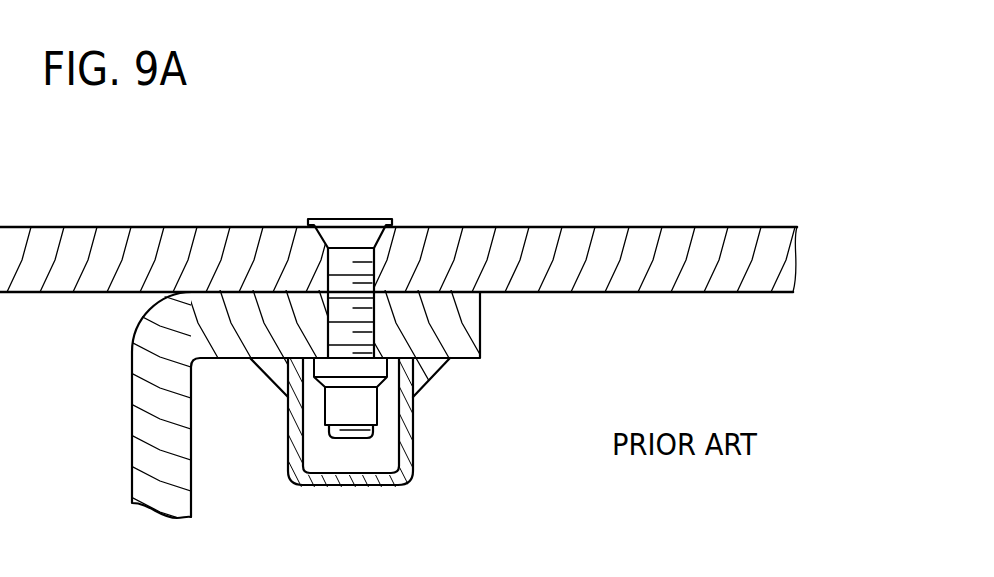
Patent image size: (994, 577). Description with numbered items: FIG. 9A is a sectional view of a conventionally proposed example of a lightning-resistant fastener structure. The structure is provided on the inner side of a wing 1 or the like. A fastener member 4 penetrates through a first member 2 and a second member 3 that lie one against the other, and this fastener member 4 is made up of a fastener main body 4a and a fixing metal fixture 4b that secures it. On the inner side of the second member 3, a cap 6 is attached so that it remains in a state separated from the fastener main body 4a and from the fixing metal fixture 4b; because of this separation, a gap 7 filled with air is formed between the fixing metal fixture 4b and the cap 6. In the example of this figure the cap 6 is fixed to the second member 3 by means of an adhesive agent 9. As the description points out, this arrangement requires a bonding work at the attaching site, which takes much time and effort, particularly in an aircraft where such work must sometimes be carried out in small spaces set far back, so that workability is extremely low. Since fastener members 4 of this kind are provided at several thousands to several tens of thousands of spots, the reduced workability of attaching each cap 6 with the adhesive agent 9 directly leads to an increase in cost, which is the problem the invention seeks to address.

The wing 1 is at (737, 238).
The first member 2 is at (770, 263).
The second member 3 is at (132, 472).
The fastener member 4 is at (365, 217).
The fastener main body 4a is at (377, 275).
The fixing metal fixture 4b is at (340, 410).
The cap 6 is at (414, 464).
The gap 7 is at (388, 432).
The adhesive agent 9 is at (450, 371).